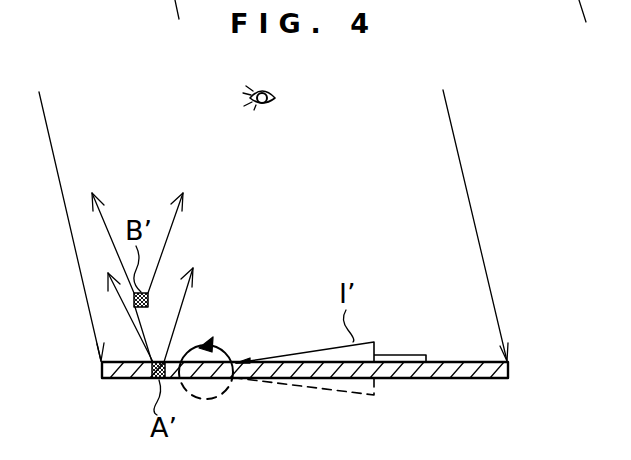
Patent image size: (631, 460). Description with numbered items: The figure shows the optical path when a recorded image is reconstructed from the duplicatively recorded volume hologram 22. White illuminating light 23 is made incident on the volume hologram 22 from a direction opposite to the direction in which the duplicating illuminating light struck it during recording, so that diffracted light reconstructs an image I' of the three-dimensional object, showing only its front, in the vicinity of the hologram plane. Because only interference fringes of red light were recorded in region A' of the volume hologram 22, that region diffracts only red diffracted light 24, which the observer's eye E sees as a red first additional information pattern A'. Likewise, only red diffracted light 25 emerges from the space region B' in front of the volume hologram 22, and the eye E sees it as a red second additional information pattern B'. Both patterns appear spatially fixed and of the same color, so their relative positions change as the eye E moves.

The volume hologram 22 is at (509, 368).
The white illuminating light 23 is at (464, 173).
The red diffracted light 24 is at (184, 300).
The red diffracted light 25 is at (170, 230).
The observer's eye E is at (276, 97).